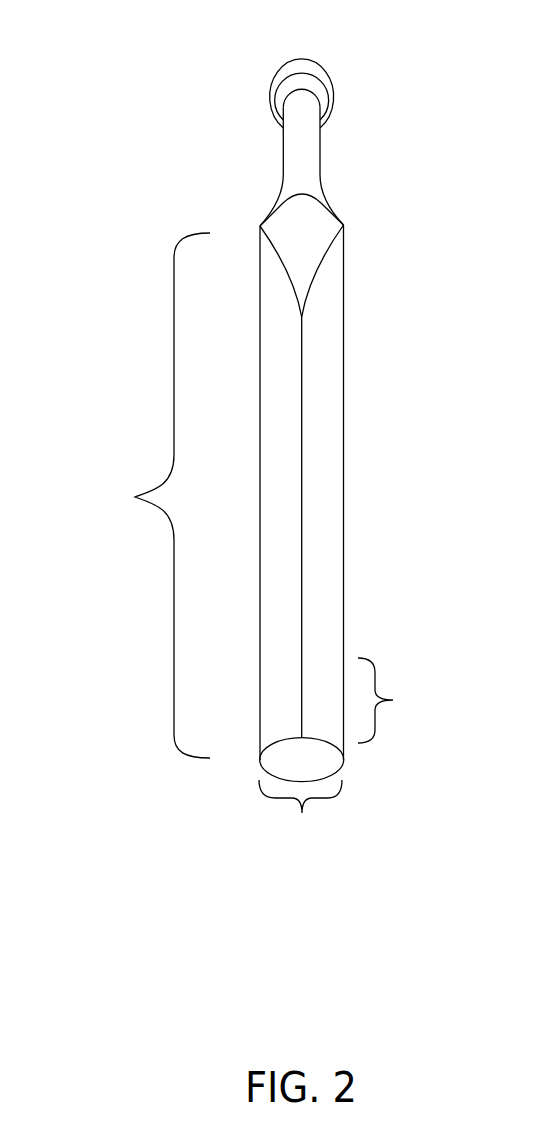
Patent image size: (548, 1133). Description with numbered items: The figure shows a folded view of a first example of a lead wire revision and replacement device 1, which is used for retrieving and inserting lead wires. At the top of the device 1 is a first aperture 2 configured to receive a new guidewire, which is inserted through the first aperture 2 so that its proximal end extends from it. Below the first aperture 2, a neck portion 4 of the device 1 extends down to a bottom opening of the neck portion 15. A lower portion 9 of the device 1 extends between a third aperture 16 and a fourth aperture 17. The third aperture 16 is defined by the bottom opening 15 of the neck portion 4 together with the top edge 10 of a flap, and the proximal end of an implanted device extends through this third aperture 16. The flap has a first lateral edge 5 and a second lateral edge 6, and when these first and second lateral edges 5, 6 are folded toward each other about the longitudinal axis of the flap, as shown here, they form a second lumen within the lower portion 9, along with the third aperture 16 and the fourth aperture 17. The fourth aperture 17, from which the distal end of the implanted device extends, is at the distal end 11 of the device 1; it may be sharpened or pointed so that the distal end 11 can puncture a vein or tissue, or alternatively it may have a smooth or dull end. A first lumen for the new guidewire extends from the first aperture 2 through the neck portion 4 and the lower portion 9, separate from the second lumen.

The lead wire revision and replacement device 1 is at (130, 84).
The first aperture 2 is at (313, 65).
The neck portion 4 is at (298, 147).
The first lateral edge 5 is at (280, 500).
The second lateral edge 6 is at (323, 392).
The lower portion 9 is at (162, 495).
The top edge 10 is at (327, 250).
The distal end 11 is at (389, 700).
The bottom opening of the neck portion 15 is at (308, 217).
The third aperture 16 is at (288, 238).
The fourth aperture 17 is at (300, 815).